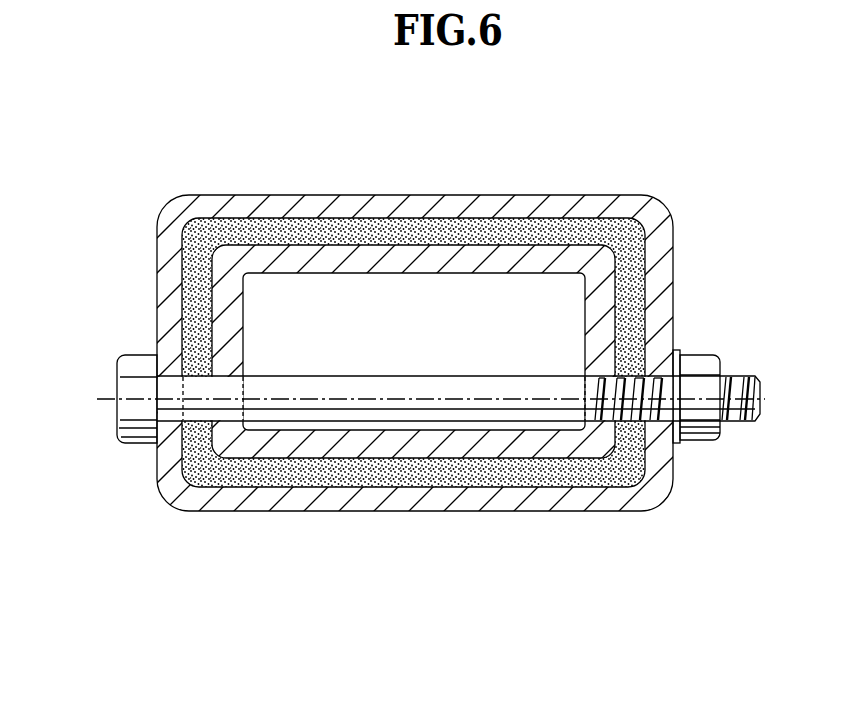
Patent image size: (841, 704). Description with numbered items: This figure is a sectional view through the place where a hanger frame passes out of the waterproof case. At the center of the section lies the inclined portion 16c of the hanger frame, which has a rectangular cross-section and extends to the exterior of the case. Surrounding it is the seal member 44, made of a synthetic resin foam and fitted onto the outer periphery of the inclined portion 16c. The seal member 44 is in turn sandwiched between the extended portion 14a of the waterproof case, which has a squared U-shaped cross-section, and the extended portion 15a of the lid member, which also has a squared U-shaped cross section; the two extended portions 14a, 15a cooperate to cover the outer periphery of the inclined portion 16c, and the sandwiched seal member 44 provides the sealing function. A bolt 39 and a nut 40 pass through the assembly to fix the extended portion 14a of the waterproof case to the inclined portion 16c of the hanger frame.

The extended portion 14a is at (400, 500).
The extended portion 15a is at (320, 203).
The seal member 44 is at (557, 233).
The inclined portion 16c is at (397, 265).
The bolt 39 is at (128, 392).
The nut 40 is at (697, 362).